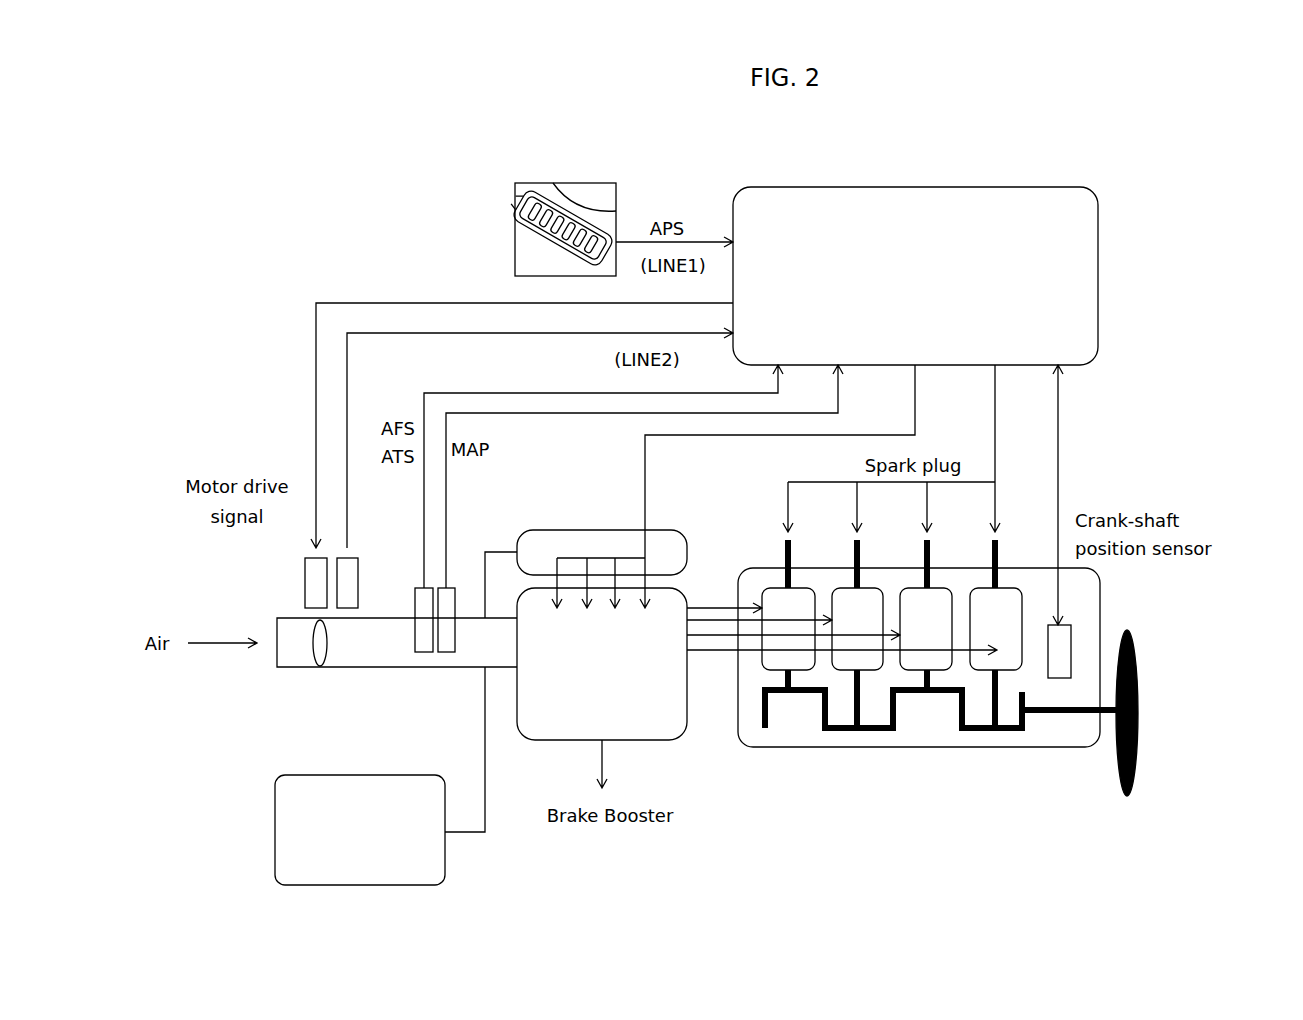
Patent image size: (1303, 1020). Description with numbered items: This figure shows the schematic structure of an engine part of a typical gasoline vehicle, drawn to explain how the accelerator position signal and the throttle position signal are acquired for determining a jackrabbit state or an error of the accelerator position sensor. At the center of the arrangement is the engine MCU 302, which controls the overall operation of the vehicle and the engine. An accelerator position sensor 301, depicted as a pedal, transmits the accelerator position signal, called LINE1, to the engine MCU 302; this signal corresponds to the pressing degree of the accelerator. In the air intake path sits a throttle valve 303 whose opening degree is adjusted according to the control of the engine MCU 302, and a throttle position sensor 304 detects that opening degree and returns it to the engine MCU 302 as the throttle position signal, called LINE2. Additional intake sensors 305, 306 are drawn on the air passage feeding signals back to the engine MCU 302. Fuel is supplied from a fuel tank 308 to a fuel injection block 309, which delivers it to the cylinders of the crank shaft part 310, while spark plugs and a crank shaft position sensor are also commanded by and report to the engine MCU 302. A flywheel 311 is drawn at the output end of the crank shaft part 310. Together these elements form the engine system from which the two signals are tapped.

The accelerator position sensor 301 is at (515, 235).
The engine MCU 302 is at (1100, 268).
The throttle valve 303 is at (300, 636).
The throttle position sensor 304 is at (358, 583).
The air flow / air temperature sensor 305 is at (423, 652).
The manifold absolute pressure sensor 306 is at (442, 652).
The fuel tank 308 is at (273, 830).
The fuel injection block 309 is at (683, 735).
The crank shaft part 310 is at (1100, 603).
The flywheel 311 is at (1140, 710).